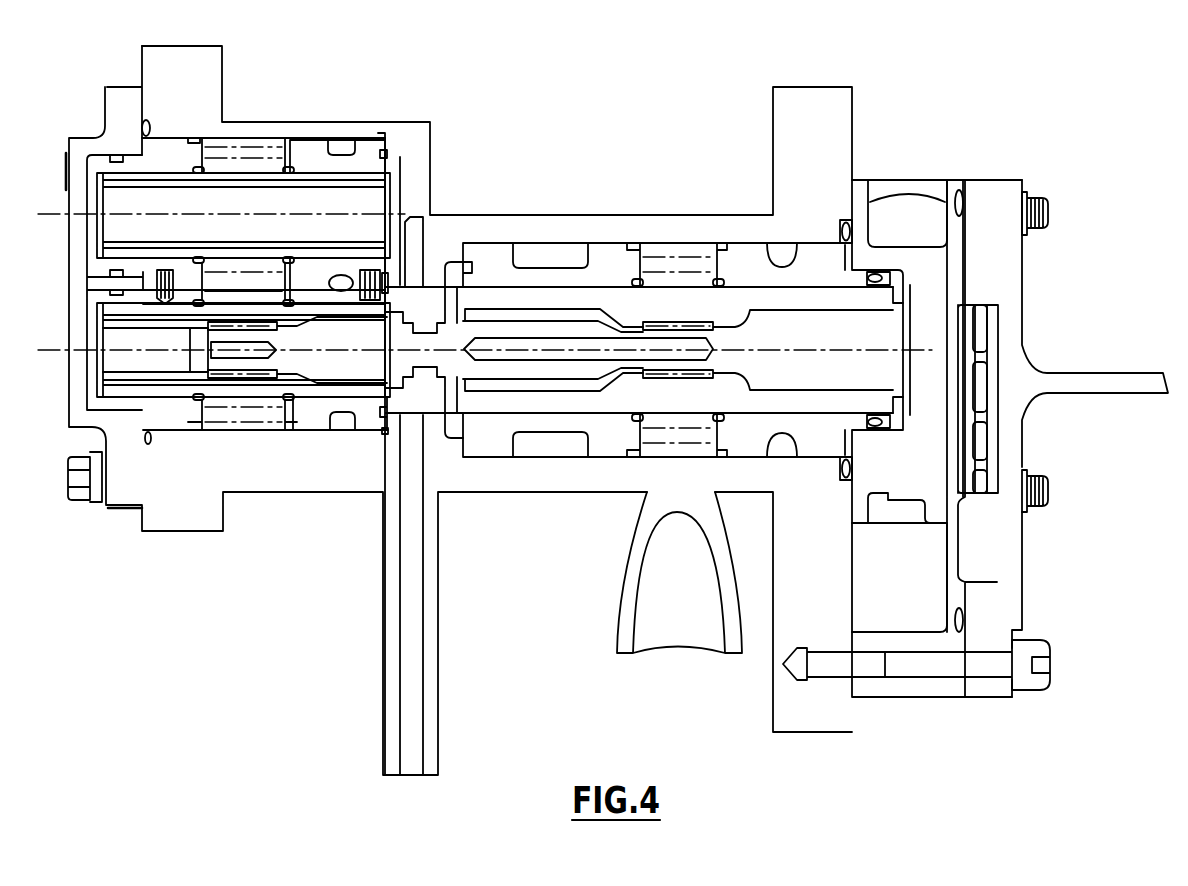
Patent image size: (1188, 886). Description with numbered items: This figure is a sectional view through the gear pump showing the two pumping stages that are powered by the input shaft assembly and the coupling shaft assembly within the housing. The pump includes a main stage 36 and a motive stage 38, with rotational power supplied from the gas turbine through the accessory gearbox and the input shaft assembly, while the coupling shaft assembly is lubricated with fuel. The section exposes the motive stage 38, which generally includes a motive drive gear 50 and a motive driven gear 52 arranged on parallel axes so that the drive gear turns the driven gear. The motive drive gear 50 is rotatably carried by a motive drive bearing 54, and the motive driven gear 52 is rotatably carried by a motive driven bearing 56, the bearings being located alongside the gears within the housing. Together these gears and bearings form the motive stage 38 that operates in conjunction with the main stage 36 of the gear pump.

The main stage 36 is at (686, 243).
The motive stage 38 is at (247, 134).
The motive drive gear 50 is at (243, 395).
The motive driven gear 52 is at (250, 173).
The motive drive bearing 54 is at (310, 408).
The motive driven bearing 56 is at (312, 153).